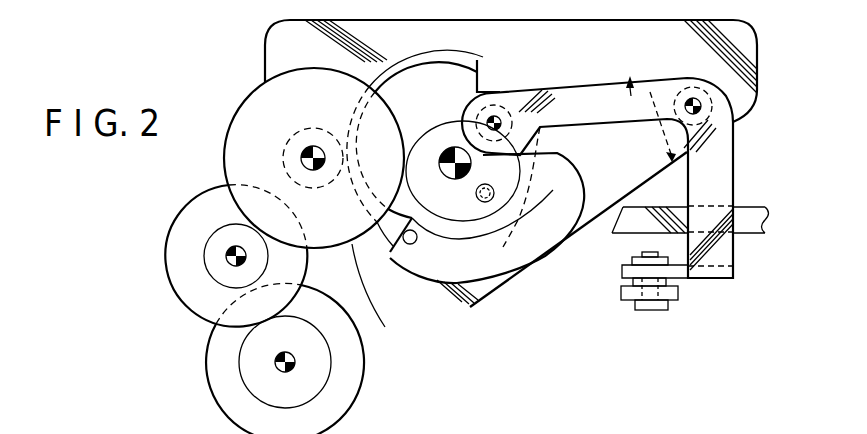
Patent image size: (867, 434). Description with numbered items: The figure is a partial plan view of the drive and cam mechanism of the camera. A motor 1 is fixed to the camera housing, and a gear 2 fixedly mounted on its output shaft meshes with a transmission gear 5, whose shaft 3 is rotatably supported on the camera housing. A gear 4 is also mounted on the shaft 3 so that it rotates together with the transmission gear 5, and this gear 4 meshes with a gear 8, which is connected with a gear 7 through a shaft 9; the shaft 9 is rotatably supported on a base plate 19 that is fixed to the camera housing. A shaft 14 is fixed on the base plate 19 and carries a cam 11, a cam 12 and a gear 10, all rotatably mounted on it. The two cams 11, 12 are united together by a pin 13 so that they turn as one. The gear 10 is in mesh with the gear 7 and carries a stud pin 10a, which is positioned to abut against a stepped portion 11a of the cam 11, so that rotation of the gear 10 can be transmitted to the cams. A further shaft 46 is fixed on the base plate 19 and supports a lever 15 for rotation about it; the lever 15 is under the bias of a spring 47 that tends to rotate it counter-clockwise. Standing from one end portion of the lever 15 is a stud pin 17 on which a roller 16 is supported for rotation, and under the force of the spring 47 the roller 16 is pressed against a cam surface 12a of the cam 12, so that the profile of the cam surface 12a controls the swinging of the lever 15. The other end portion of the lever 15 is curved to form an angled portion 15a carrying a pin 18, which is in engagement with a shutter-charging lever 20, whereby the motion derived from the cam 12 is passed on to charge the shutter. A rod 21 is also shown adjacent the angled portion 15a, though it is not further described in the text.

The motor 1 is at (355, 400).
The gear 2 is at (332, 370).
The shaft 3 is at (227, 248).
The gear 4 is at (220, 285).
The transmission gear 5 is at (143, 200).
The gear 7 is at (312, 128).
The gear 8 is at (233, 63).
The shaft 9 is at (283, 122).
The gear 10 is at (490, 282).
The stud pin 10a is at (413, 244).
The cam 11 is at (447, 240).
The stepped portion 11a is at (398, 242).
The cam 12 is at (532, 206).
The cam surface 12a is at (410, 114).
The pin 13 is at (492, 206).
The shaft 14 is at (455, 158).
The lever 15 is at (591, 90).
The angled portion 15a is at (620, 272).
The roller 16 is at (506, 106).
The stud pin 17 is at (494, 123).
The pin 18 is at (657, 310).
The base plate 19 is at (588, 225).
The shutter-charging lever 20 is at (678, 292).
The rod 21 is at (752, 228).
The shaft 46 is at (698, 109).
The spring 47 is at (650, 92).